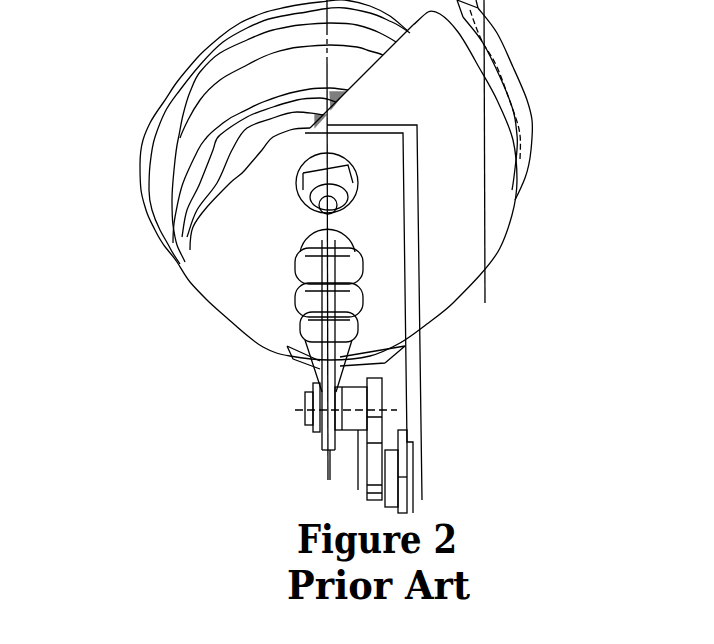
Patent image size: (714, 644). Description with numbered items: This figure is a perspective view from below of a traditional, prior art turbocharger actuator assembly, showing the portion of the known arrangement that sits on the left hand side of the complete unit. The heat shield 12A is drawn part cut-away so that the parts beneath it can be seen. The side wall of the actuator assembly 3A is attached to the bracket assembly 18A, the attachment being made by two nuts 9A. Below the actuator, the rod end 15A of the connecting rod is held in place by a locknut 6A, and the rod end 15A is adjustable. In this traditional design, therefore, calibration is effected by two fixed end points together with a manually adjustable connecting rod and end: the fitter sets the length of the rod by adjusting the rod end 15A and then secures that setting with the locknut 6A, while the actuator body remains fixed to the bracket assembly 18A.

The actuator assembly 3A is at (193, 133).
The locknut 6A is at (362, 263).
The nuts 9A is at (358, 170).
The heat shield 12A is at (483, 53).
The rod end 15A is at (355, 330).
The bracket assembly 18A is at (425, 393).